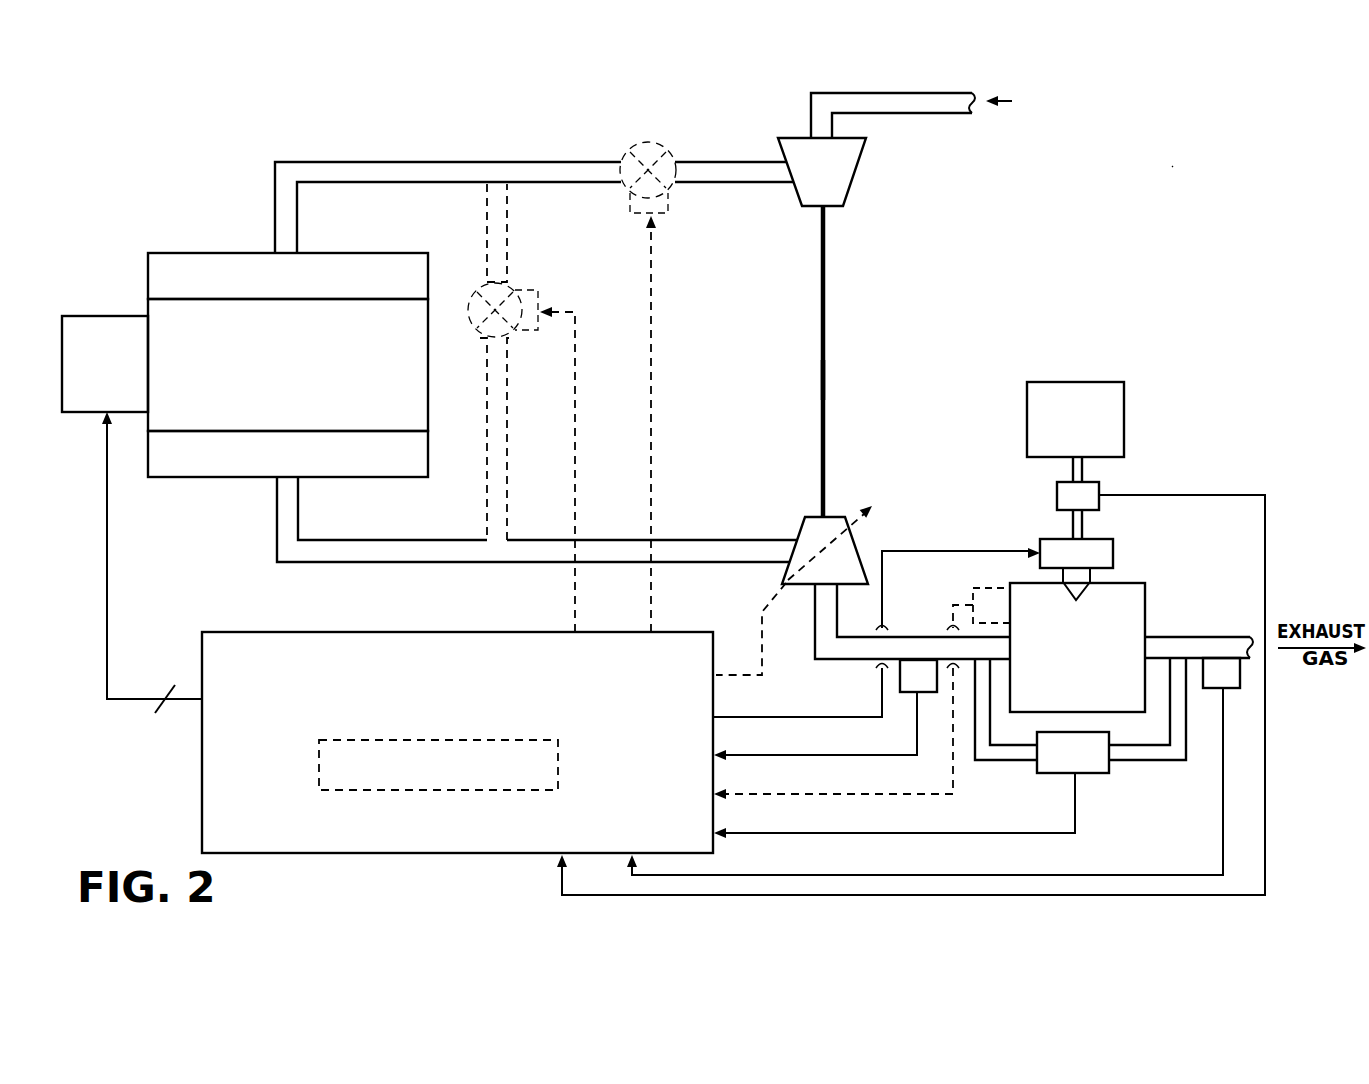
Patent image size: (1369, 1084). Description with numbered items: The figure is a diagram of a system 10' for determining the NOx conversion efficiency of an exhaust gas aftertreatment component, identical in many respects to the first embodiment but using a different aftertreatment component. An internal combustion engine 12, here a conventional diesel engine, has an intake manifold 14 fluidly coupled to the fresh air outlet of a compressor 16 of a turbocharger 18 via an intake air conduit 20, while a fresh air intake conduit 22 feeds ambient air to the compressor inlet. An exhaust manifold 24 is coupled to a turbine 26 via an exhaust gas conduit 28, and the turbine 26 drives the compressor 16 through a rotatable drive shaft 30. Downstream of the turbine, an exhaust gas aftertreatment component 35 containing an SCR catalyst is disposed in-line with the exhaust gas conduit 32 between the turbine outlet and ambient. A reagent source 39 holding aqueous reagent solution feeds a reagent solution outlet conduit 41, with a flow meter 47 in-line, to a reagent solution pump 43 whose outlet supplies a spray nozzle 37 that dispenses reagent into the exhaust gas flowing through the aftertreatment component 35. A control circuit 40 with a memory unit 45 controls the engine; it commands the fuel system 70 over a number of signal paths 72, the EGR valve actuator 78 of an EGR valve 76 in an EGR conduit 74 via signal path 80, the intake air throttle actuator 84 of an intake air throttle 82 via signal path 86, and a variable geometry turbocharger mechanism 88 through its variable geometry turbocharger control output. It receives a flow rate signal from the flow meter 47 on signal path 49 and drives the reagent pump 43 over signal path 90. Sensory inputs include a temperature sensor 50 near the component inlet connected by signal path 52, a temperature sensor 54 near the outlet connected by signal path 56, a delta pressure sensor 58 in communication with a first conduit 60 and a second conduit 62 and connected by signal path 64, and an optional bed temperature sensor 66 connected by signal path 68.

The system for determining NOx conversion efficiency 10' is at (1215, 133).
The internal combustion engine 12 is at (428, 396).
The intake manifold 14 is at (193, 253).
The compressor 16 is at (810, 209).
The turbocharger 18 is at (836, 298).
The intake air conduit 20 is at (442, 161).
The fresh air intake conduit 22 is at (932, 115).
The exhaust manifold 24 is at (208, 479).
The turbine 26 is at (813, 517).
The exhaust gas conduit 28 is at (343, 540).
The rotatable drive shaft 30 is at (819, 372).
The exhaust gas conduit 32 is at (812, 628).
The exhaust gas aftertreatment component 35 is at (1146, 606).
The reagent solution injector or spray nozzle 37 is at (1093, 577).
The reagent source 39 is at (1075, 382).
The control circuit 40 is at (400, 632).
The reagent solution outlet conduit 41 is at (1083, 473).
The reagent solution pump 43 is at (1046, 539).
The memory unit 45 is at (560, 756).
The flow meter or sensor 47 is at (1057, 492).
The signal path 49 is at (1185, 495).
The temperature sensor 50 is at (916, 694).
The signal path 52 is at (820, 752).
The temperature sensor 54 is at (1232, 690).
The signal path 56 is at (1168, 873).
The delta pressure sensor 58 is at (1056, 777).
The first conduit 60 is at (1006, 773).
The second conduit 62 is at (1146, 774).
The signal path 64 is at (1077, 810).
The temperature sensor 66 is at (966, 592).
The signal path 68 is at (950, 767).
The fuel system 70 is at (81, 416).
The signal paths 72 is at (110, 632).
The EGR conduit 74 is at (507, 242).
The EGR valve 76 is at (478, 292).
The EGR valve actuator 78 is at (530, 335).
The signal path 80 is at (572, 590).
The intake air throttle 82 is at (650, 142).
The intake air throttle actuator 84 is at (670, 196).
The signal path 86 is at (659, 283).
The variable geometry turbocharger mechanism 88 is at (758, 617).
The signal path 90 is at (930, 551).